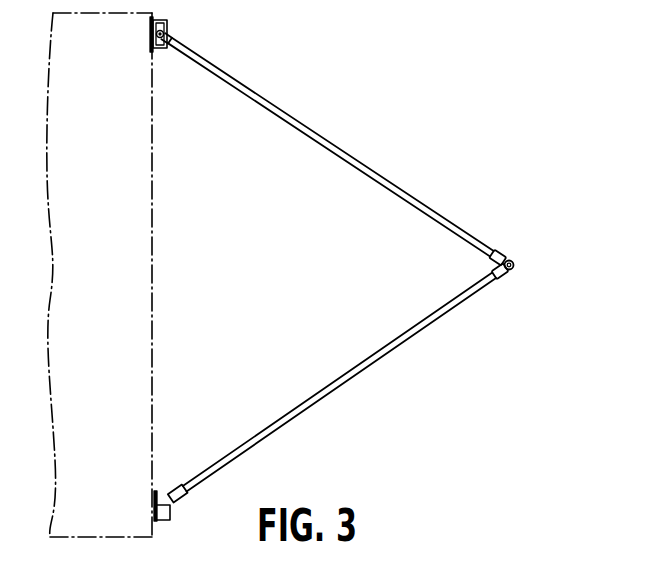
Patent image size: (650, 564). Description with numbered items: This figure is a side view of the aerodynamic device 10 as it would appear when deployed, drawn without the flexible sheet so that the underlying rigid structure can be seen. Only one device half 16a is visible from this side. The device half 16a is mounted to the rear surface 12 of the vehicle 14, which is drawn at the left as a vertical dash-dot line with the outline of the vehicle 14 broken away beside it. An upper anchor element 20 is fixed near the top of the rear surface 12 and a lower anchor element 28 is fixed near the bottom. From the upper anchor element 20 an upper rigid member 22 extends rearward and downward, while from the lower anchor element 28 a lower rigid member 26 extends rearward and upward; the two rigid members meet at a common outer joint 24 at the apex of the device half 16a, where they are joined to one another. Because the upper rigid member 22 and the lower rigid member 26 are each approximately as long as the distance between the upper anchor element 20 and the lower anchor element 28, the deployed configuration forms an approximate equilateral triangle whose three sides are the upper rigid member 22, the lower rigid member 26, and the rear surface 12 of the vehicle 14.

The aerodynamic device 10 is at (471, 337).
The rear surface 12 is at (159, 310).
The vehicle 14 is at (53, 251).
The device half 16a is at (424, 192).
The upper anchor element 20 is at (161, 19).
The upper rigid member 22 is at (452, 220).
The pivot joint 24 is at (515, 266).
The lower rigid member 26 is at (367, 373).
The lower anchor element 28 is at (180, 507).